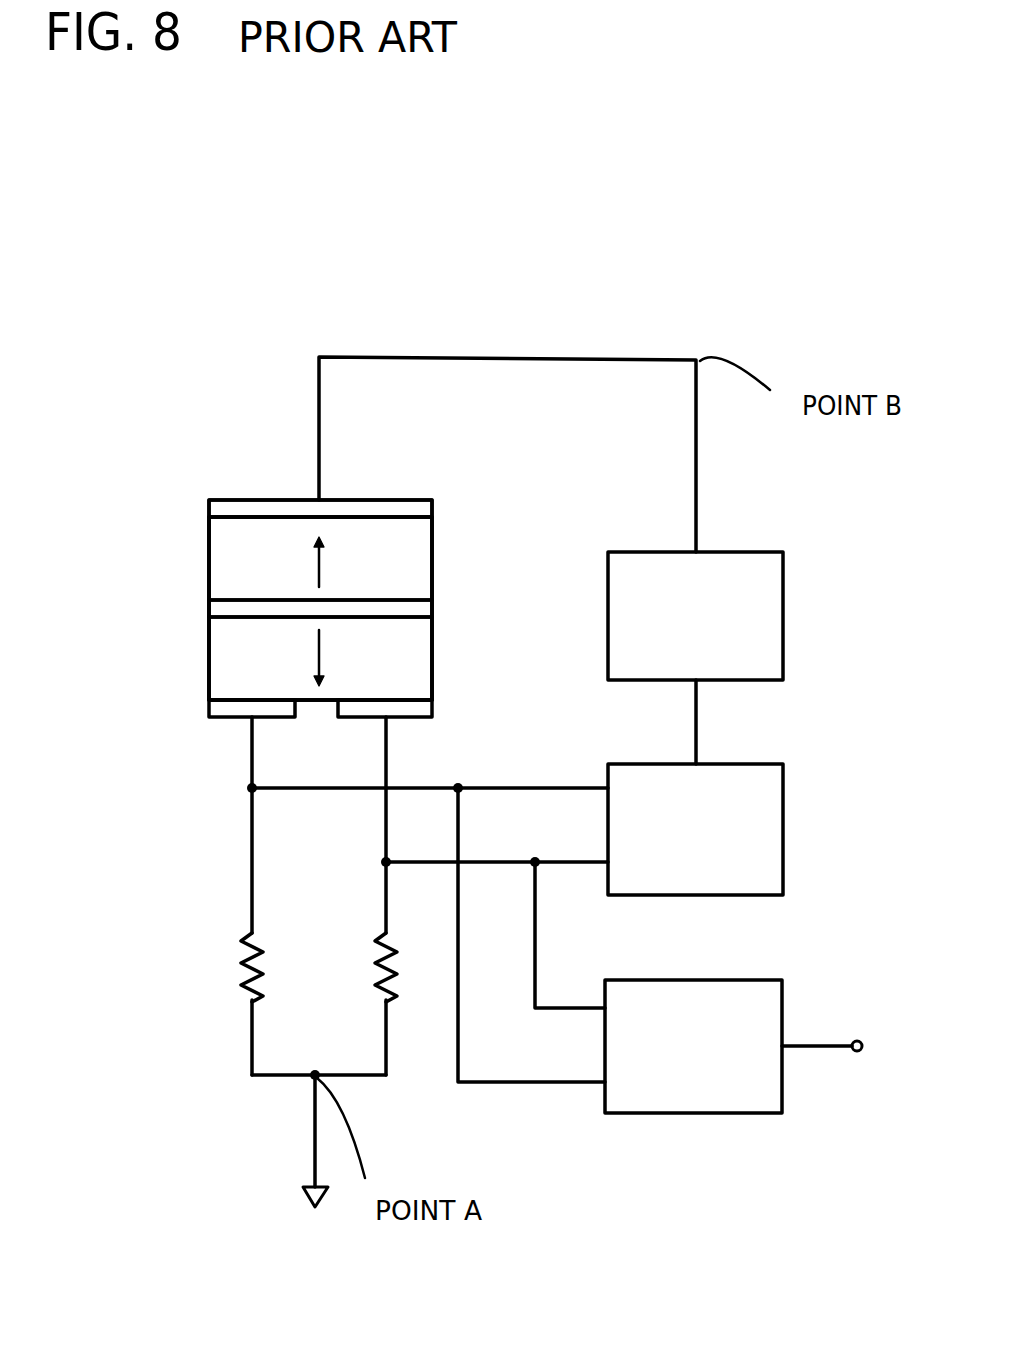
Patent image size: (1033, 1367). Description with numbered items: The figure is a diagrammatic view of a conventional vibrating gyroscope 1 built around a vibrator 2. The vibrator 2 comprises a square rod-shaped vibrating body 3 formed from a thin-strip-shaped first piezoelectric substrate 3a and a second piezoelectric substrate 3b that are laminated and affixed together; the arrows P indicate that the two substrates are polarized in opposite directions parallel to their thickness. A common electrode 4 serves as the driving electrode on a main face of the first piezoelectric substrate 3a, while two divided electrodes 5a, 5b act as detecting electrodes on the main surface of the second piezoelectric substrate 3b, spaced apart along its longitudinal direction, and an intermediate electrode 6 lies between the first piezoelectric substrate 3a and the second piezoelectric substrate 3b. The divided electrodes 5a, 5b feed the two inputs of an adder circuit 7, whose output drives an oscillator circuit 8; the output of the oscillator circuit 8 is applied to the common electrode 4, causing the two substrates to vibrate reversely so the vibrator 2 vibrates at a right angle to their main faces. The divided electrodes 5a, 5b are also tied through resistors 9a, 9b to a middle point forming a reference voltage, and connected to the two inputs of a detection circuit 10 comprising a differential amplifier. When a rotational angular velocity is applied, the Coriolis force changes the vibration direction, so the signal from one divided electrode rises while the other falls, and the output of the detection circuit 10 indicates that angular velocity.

The vibrating gyroscope 1 is at (235, 175).
The vibrator 2 is at (241, 489).
The vibrating body 3 is at (440, 532).
The first piezoelectric substrate 3a is at (413, 565).
The second piezoelectric substrate 3b is at (423, 662).
The common electrode 4 is at (397, 505).
The divided electrode 5a is at (413, 719).
The divided electrode 5b is at (237, 719).
The intermediate electrode 6 is at (425, 612).
The adder circuit 7 is at (783, 845).
The oscillator circuit 8 is at (783, 617).
The resistor 9a is at (393, 985).
The resistor 9b is at (245, 975).
The detection circuit 10 is at (698, 1113).